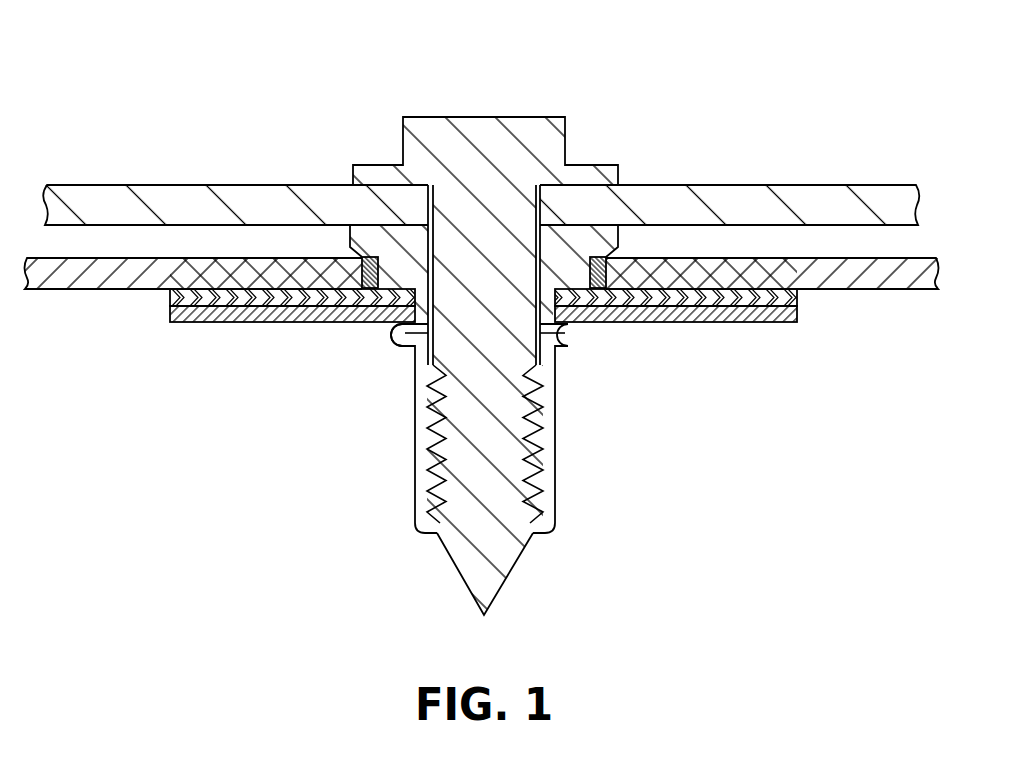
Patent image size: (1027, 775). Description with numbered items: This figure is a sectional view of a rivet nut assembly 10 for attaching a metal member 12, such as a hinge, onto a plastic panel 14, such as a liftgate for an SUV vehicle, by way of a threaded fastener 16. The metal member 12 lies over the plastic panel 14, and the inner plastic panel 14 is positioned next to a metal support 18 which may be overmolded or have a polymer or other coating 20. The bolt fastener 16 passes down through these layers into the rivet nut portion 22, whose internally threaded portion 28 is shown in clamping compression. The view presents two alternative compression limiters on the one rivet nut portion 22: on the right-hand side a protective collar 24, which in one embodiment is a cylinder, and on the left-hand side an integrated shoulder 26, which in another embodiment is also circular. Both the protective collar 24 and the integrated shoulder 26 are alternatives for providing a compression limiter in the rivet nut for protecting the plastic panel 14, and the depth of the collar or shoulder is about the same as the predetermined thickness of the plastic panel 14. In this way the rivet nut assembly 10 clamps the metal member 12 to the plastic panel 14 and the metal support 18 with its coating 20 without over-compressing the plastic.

The rivet nut assembly 10 is at (433, 62).
The metal member 12 is at (797, 185).
The plastic panel 14 is at (842, 272).
The threaded fastener 16 is at (473, 375).
The metal support 18 is at (768, 322).
The coating 20 is at (692, 297).
The rivet nut portion 22 is at (543, 536).
The protective collar 24 is at (592, 258).
The integrated shoulder 26 is at (365, 273).
The internally threaded portion 28 is at (393, 333).